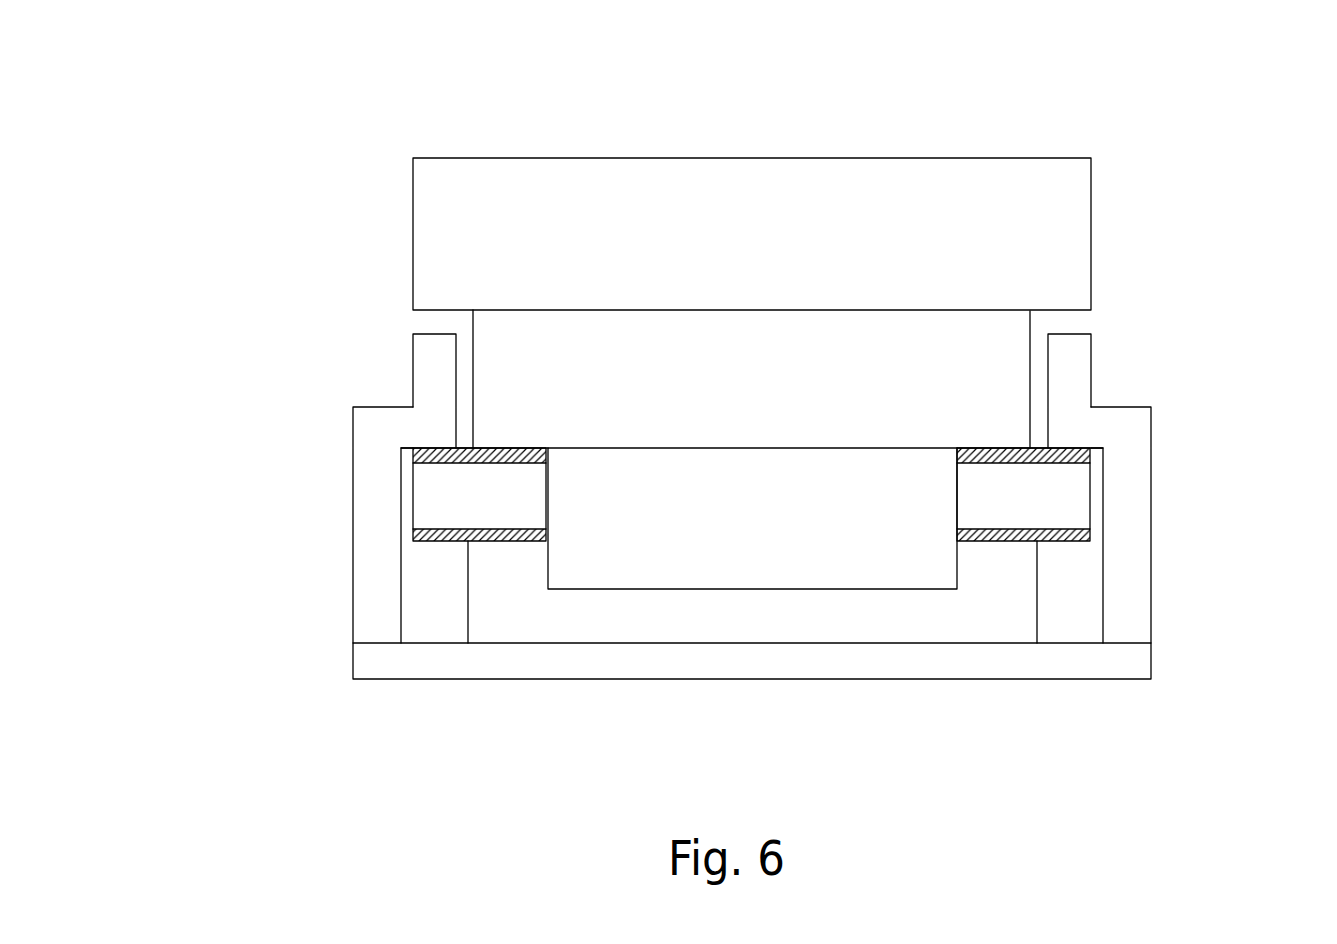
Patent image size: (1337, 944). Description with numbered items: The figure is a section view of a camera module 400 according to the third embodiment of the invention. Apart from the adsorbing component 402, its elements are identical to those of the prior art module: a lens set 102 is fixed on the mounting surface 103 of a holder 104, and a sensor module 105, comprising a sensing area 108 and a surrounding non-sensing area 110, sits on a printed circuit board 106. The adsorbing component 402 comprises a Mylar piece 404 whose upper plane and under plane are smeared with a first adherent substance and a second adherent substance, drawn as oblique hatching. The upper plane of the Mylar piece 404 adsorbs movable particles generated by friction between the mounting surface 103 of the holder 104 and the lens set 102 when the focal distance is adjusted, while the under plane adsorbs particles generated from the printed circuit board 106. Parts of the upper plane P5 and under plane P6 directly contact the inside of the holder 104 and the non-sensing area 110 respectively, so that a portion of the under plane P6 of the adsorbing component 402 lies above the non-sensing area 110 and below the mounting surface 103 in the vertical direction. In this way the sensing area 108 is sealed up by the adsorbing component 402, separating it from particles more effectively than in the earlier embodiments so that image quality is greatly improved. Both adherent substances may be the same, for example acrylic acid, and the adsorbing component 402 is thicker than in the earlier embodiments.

The camera module 400 is at (1178, 117).
The lens set 102 is at (432, 237).
The mounting surface 103 is at (455, 377).
The holder 104 is at (367, 612).
The sensor module 105 is at (835, 627).
The printed circuit board 106 is at (1078, 667).
The sensing area 108 is at (917, 588).
The non-sensing area 110 is at (497, 541).
The adsorbing component 402 is at (555, 497).
The Mylar piece 404 is at (420, 497).
The upper plane P5 is at (957, 451).
The under plane P6 is at (957, 541).